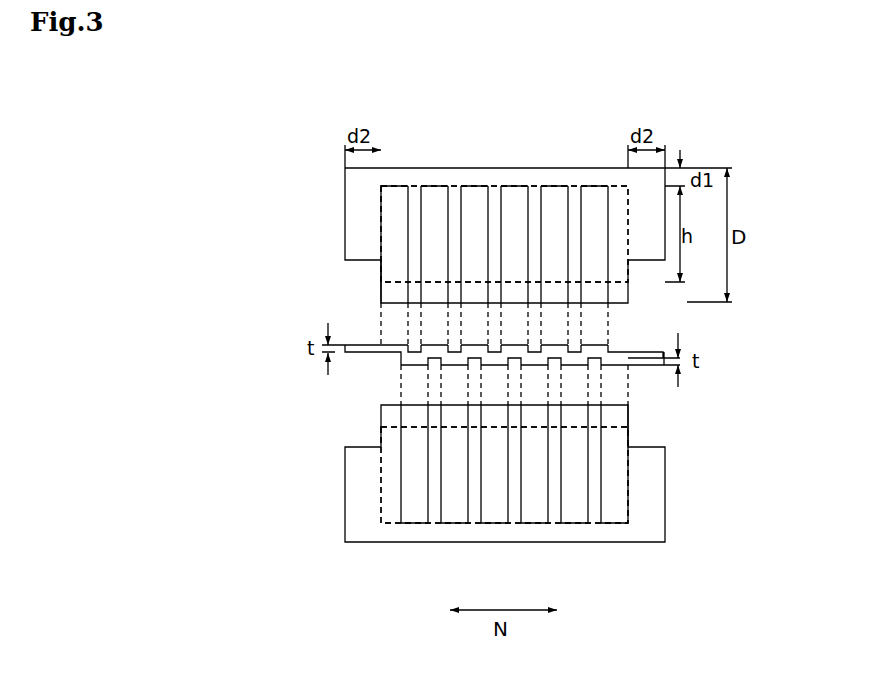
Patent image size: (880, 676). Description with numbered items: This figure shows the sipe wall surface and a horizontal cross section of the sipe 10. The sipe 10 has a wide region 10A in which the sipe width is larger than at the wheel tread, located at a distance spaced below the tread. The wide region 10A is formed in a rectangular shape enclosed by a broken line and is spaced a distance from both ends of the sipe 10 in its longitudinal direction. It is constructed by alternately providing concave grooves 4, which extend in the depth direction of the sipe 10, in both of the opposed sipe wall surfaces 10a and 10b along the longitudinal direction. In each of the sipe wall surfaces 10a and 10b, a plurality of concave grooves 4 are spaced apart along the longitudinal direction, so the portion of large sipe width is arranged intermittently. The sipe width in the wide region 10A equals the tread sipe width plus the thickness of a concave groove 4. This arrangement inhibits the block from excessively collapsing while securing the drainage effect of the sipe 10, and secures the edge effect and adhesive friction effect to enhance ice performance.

The sipe wall surface 10a is at (430, 175).
The sipe wall surface 10b is at (432, 532).
The sipe 10 is at (361, 353).
The concave groove 4 is at (508, 187).
The wide region 10A is at (573, 186).